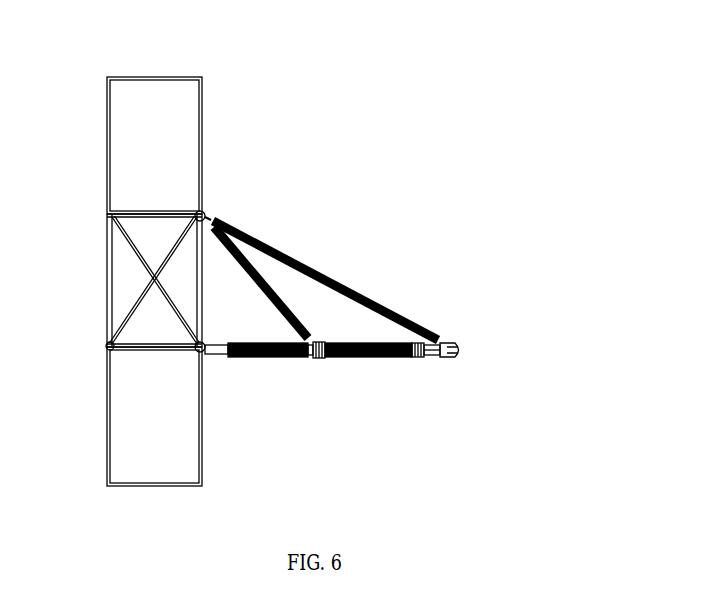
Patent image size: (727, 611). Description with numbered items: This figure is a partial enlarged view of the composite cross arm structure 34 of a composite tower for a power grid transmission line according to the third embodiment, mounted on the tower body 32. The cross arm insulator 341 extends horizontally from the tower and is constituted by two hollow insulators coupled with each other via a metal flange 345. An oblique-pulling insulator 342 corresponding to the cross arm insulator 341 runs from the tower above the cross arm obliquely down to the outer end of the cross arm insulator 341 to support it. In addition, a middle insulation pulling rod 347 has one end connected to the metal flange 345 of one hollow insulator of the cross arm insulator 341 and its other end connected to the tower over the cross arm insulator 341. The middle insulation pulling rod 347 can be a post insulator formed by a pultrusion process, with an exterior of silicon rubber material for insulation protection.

The mast / support tower 32 is at (281, 243).
The composite cross arm structure 34 is at (366, 316).
The cross arm insulator 341 is at (332, 415).
The oblique-pulling insulator 342 is at (337, 242).
The flange 345 is at (384, 412).
The middle insulation pulling rod 347 is at (407, 295).